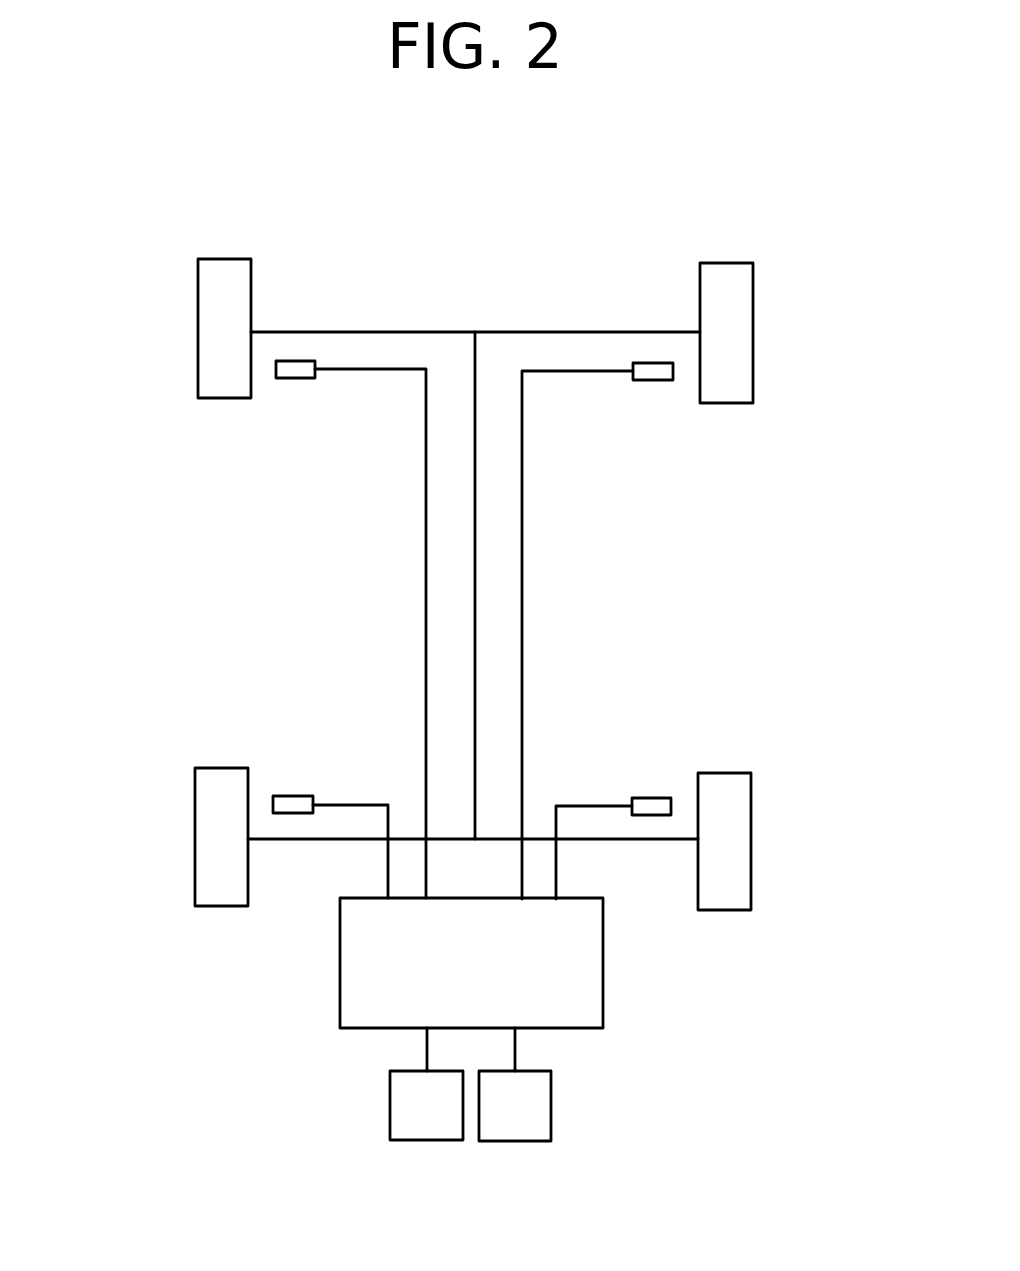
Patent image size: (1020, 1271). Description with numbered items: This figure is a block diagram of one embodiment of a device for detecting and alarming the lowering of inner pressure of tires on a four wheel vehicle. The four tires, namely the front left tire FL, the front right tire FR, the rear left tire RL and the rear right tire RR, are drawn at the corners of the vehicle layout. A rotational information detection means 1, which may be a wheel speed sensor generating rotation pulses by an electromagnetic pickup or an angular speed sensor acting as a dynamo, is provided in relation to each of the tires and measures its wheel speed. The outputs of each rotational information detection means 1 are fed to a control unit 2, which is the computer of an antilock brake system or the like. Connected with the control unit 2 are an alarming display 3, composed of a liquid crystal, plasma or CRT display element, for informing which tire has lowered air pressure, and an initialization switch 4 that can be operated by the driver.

The rotational information detection means 1 is at (280, 372).
The control unit 2 is at (593, 1010).
The alarming display 3 is at (403, 1092).
The initialization switch 4 is at (540, 1098).
The front left tire FL is at (212, 300).
The front right tire FR is at (737, 308).
The rear left tire RL is at (208, 821).
The rear right tire RR is at (733, 829).